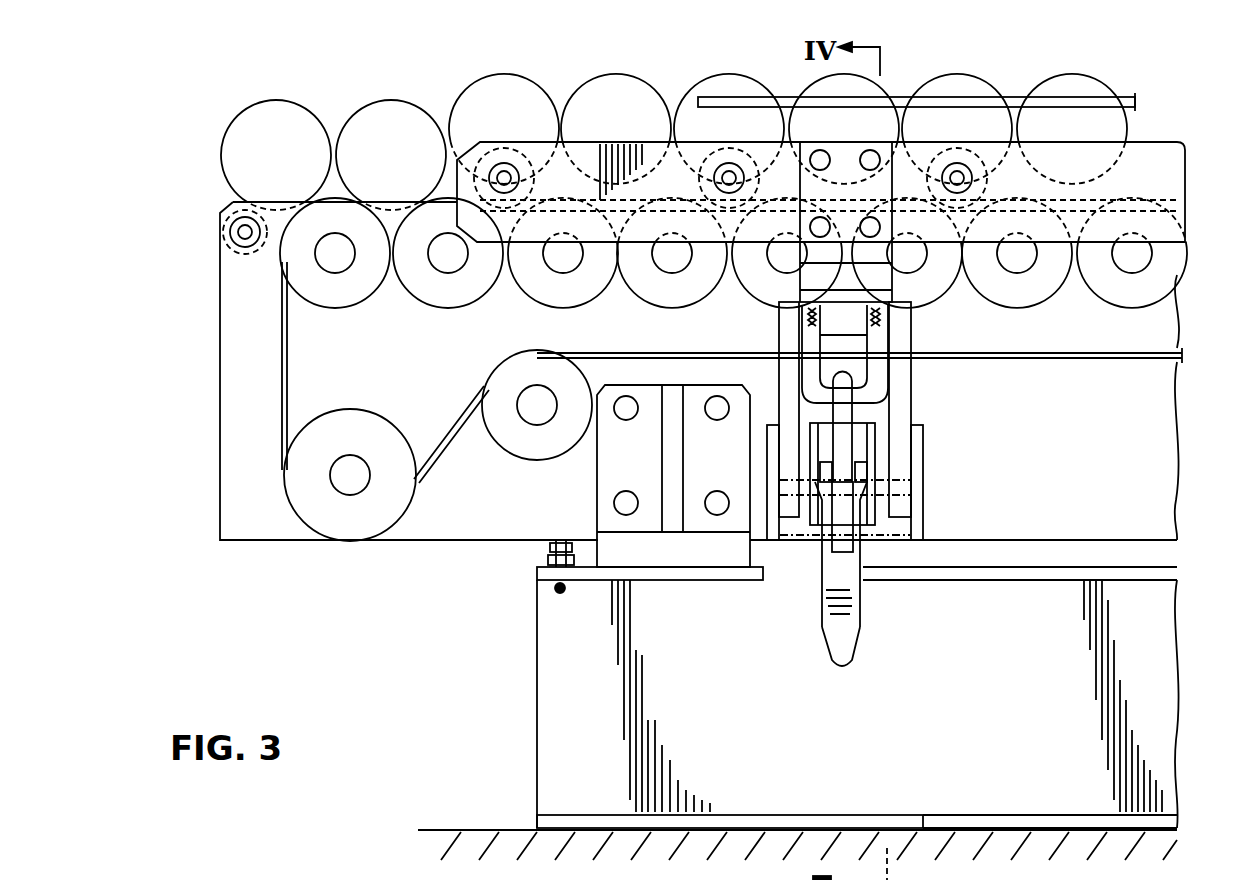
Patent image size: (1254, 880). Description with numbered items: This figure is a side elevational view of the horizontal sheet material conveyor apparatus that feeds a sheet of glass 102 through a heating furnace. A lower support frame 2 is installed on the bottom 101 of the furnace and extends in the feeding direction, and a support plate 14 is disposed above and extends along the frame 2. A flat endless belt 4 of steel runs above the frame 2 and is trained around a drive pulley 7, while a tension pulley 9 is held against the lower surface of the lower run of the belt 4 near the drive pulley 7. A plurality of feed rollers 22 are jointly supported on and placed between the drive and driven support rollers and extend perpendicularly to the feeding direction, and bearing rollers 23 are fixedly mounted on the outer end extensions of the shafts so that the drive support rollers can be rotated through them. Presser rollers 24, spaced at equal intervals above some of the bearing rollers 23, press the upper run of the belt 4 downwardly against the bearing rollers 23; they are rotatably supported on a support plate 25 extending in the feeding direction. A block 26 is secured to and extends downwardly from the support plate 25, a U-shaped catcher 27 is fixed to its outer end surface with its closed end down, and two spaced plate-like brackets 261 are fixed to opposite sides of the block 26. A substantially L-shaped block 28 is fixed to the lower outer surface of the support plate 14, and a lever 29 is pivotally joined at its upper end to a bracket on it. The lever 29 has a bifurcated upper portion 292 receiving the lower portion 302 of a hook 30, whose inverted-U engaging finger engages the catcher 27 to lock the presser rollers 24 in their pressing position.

The lower support frame 2 is at (1155, 660).
The endless belt 4 is at (1130, 362).
The drive pulley 7 is at (355, 530).
The tension pulley 9 is at (548, 448).
The support plate 14 is at (1155, 470).
The feed roller 22 is at (357, 130).
The bearing roller 23 is at (341, 306).
The presser roller 24 is at (520, 157).
The support plate 25 is at (1177, 163).
The block 26 is at (847, 158).
The U-shaped catcher 27 is at (878, 370).
The L-shaped block 28 is at (813, 520).
The lever 29 is at (852, 637).
The hook 30 is at (847, 415).
The bottom 101 is at (1040, 828).
The sheet of glass 102 is at (1103, 100).
The plate-like bracket 261 is at (903, 472).
The bifurcated upper portion 292 is at (873, 442).
The lower portion 302 is at (847, 520).